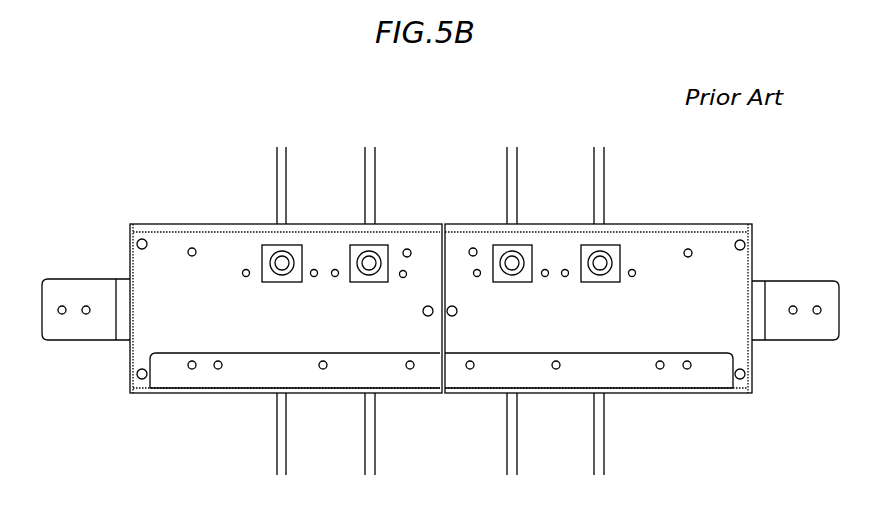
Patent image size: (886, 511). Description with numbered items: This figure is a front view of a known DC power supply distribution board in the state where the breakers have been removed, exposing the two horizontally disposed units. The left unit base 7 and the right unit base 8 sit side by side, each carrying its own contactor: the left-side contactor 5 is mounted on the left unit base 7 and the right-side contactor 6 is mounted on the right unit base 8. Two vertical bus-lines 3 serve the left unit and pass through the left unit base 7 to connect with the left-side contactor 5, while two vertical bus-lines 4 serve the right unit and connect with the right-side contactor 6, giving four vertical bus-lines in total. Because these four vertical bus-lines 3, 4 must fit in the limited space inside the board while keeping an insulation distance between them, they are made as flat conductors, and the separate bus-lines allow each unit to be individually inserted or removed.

The vertical bus-lines 3 is at (286, 156).
The vertical bus-lines 4 is at (517, 157).
The left-side contactor 5 is at (355, 245).
The right-side contactor 6 is at (588, 245).
The left unit base 7 is at (173, 223).
The right unit base 8 is at (703, 223).